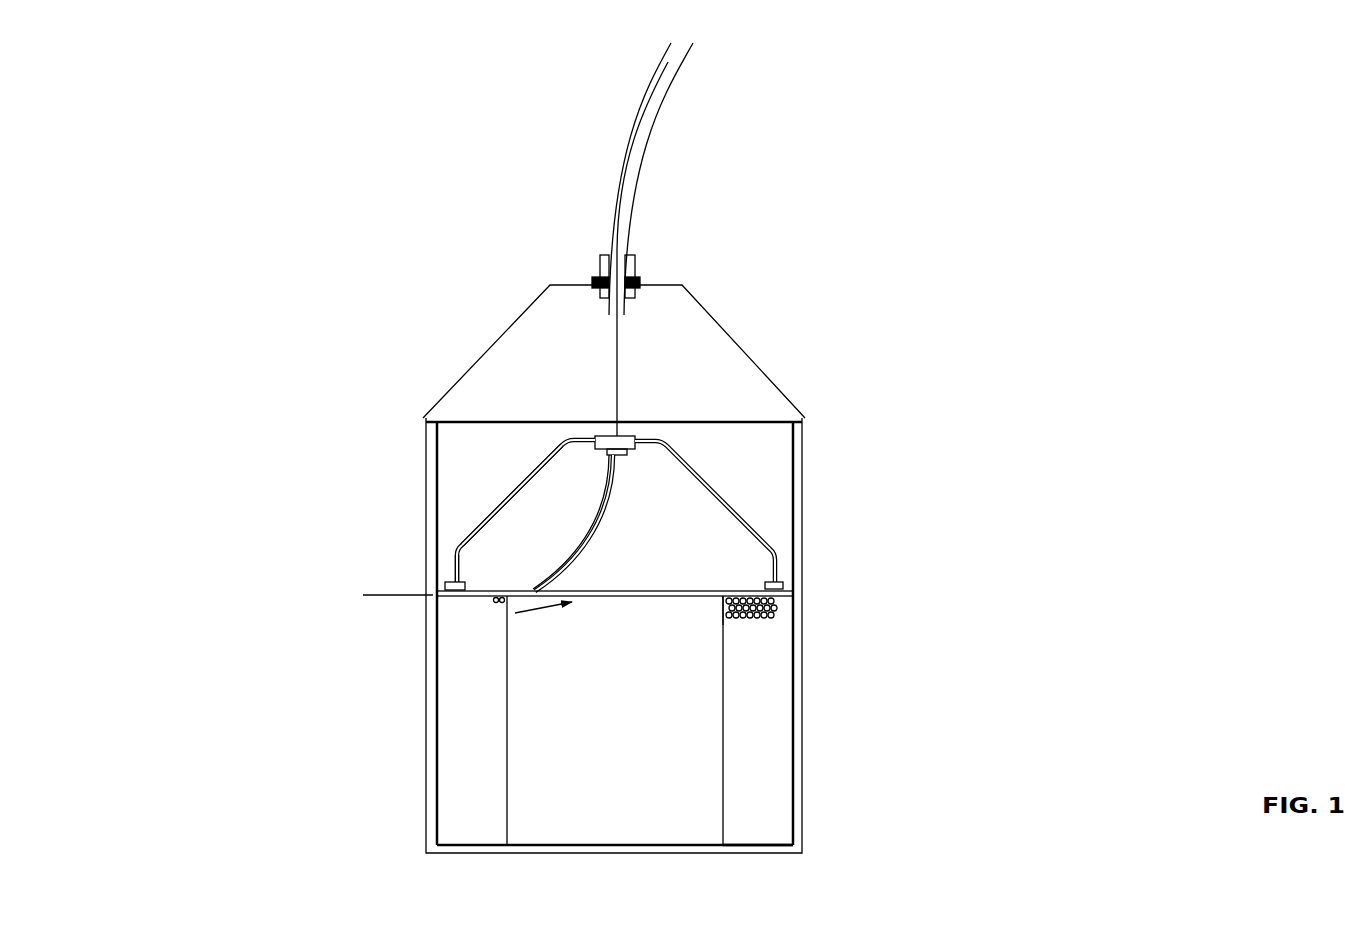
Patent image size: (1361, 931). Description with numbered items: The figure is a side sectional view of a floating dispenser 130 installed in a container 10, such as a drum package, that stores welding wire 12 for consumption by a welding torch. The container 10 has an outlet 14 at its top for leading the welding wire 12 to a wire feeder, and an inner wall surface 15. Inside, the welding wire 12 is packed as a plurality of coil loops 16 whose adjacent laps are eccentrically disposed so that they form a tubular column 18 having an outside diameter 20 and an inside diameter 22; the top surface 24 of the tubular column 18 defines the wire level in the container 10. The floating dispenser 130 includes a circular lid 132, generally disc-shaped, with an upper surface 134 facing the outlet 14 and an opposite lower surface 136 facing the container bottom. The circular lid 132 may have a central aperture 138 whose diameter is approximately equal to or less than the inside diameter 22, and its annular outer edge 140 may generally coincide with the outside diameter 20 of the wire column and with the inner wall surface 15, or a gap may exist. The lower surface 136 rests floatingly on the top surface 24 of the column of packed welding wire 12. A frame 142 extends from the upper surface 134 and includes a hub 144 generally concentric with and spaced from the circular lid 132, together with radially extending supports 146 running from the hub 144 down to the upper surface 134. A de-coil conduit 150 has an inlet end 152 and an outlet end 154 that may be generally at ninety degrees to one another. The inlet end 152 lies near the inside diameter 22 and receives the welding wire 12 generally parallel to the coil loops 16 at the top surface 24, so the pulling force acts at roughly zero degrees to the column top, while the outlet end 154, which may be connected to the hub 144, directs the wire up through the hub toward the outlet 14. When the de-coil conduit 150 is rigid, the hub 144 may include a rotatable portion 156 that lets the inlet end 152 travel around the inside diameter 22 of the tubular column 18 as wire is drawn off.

The container 10 is at (808, 792).
The welding wire 12 is at (617, 363).
The outlet 14 is at (600, 262).
The inner wall surface 15 is at (790, 513).
The coil loops 16 is at (776, 607).
The tubular column 18 is at (748, 689).
The outside diameter 20 is at (790, 708).
The inside diameter 22 is at (723, 770).
The top surface 24 is at (412, 593).
The floating dispenser 130 is at (712, 438).
The circular lid 132 is at (478, 581).
The upper surface 134 is at (723, 595).
The lower surface 136 is at (723, 598).
The central aperture 138 is at (508, 590).
The annular outer edge 140 is at (433, 590).
The frame 142 is at (488, 500).
The hub 144 is at (603, 437).
The radially extending supports 146 is at (576, 440).
The de-coil conduit 150 is at (545, 422).
The inlet end 152 is at (543, 587).
The outlet end 154 is at (623, 457).
The rotatable portion 156 is at (667, 441).